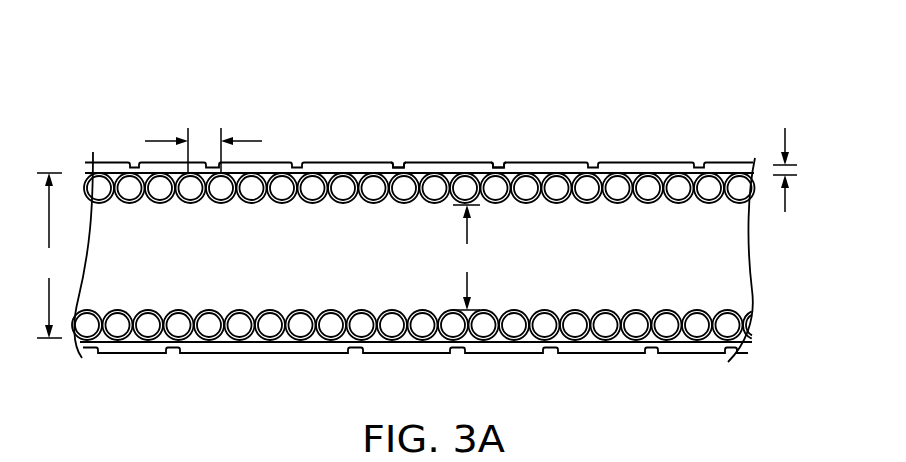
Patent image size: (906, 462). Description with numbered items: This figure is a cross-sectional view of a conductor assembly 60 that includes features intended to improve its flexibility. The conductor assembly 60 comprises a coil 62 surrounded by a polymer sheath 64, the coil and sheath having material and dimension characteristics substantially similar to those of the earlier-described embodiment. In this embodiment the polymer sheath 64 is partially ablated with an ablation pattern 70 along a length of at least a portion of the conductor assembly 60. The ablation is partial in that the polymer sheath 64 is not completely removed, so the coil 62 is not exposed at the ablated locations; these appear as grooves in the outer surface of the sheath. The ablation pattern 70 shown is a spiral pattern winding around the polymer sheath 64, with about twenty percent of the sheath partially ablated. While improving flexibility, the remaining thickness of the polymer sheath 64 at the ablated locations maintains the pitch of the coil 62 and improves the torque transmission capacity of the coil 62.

The conductor assembly 60 is at (712, 100).
The coil 62 is at (672, 214).
The polymer sheath 64 is at (264, 162).
The ablation pattern 70 is at (398, 168).